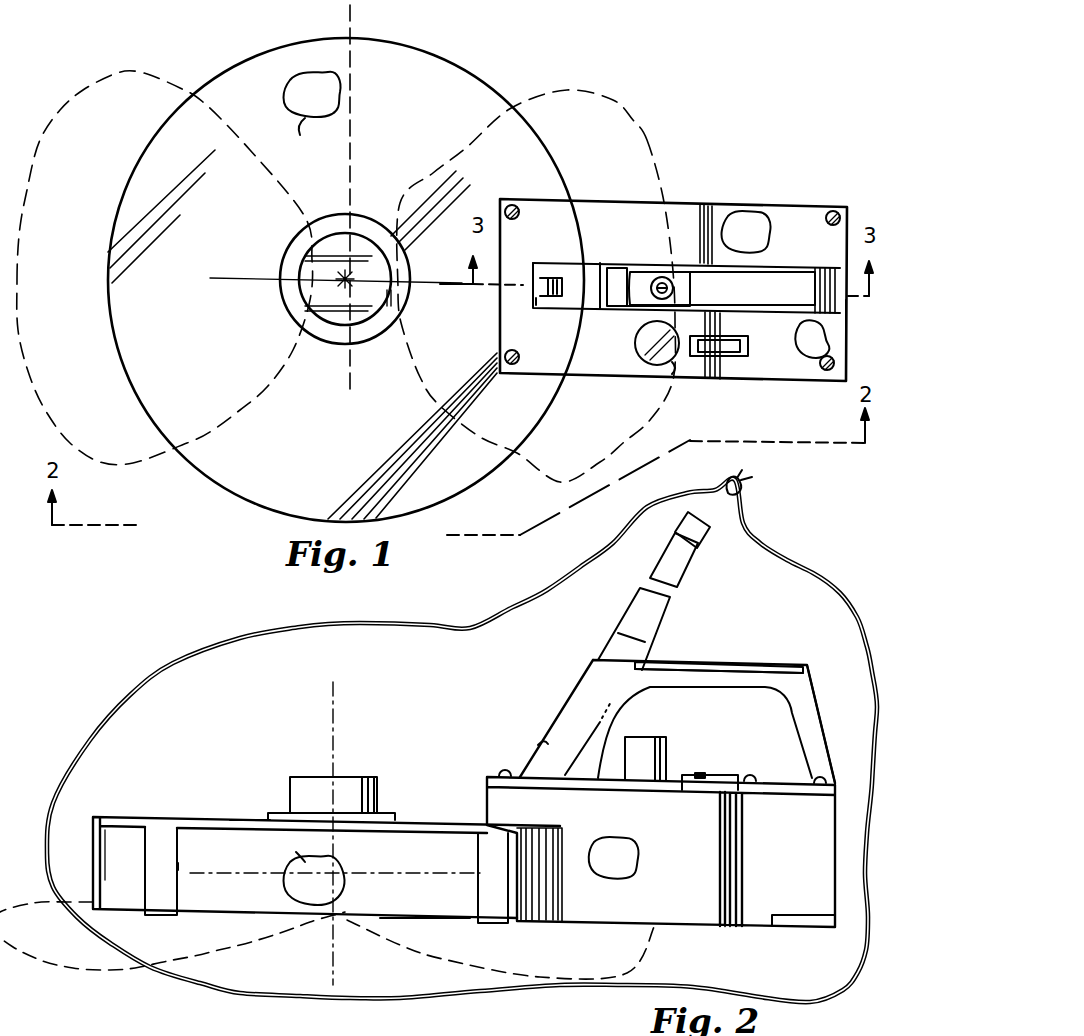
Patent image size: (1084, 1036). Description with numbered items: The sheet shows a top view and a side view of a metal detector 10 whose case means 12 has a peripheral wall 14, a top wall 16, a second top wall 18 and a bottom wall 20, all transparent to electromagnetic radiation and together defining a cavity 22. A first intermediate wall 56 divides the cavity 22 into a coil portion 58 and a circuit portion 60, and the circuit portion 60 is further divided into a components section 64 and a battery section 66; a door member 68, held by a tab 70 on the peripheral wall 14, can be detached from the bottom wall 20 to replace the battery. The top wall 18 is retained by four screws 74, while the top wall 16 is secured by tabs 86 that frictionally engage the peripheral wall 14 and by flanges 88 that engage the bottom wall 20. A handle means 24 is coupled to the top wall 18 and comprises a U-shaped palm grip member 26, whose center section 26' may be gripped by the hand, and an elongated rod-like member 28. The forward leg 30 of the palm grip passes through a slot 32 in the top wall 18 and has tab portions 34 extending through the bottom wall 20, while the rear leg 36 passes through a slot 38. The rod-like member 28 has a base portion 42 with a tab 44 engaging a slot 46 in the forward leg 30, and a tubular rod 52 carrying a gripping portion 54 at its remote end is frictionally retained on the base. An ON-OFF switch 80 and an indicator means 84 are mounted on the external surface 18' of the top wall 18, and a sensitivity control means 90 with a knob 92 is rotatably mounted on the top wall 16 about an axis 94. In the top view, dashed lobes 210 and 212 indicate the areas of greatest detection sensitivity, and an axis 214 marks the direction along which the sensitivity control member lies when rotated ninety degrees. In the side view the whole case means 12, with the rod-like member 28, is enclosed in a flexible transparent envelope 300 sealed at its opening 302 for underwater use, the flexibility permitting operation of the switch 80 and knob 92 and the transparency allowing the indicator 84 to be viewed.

In FIG. 1, the metal detector 10 is at (734, 96).
In FIG. 2, the metal detector 10 is at (278, 727).
In FIG. 1, the case means 12 is at (470, 72).
In FIG. 2, the case means 12 is at (125, 815).
In FIG. 2, the peripheral wall 14 is at (93, 840).
In FIG. 1, the top wall 16 is at (333, 434).
In FIG. 2, the top wall 16 is at (198, 816).
In FIG. 1, the top wall 18 is at (673, 290).
In FIG. 2, the top wall 18 is at (661, 827).
In FIG. 1, the external surface 18' is at (682, 383).
In FIG. 2, the bottom wall 20 is at (408, 919).
In FIG. 1, the cavity 22 is at (298, 106).
In FIG. 2, the cavity 22 is at (300, 892).
In FIG. 1, the handle means 24 is at (775, 265).
In FIG. 2, the handle means 24 is at (578, 684).
In FIG. 1, the palm grip member 26 is at (686, 335).
In FIG. 2, the palm grip member 26 is at (719, 646).
In FIG. 1, the center section 26' is at (747, 288).
In FIG. 2, the center section 26' is at (719, 648).
In FIG. 1, the elongated rod-like member 28 is at (625, 272).
In FIG. 2, the elongated rod-like member 28 is at (618, 636).
In FIG. 1, the forward leg 30 is at (570, 265).
In FIG. 2, the forward leg 30 is at (603, 708).
In FIG. 1, the slot 32 is at (536, 305).
In FIG. 2, the tab portions 34 is at (548, 928).
In FIG. 1, the rear leg 36 is at (812, 282).
In FIG. 2, the rear leg 36 is at (820, 712).
In FIG. 1, the slot 38 is at (846, 322).
In FIG. 1, the base portion 42 is at (617, 308).
In FIG. 1, the tab 44 is at (546, 282).
In FIG. 2, the tab 44 is at (540, 745).
In FIG. 1, the slot 46 is at (556, 300).
In FIG. 1, the tubular rod 52 is at (672, 282).
In FIG. 2, the tubular rod 52 is at (686, 575).
In FIG. 2, the gripping portion 54 is at (710, 540).
In FIG. 1, the first intermediate wall 56 is at (500, 294).
In FIG. 2, the first intermediate wall 56 is at (487, 803).
In FIG. 1, the coil portion 58 is at (294, 158).
In FIG. 2, the coil portion 58 is at (287, 847).
In FIG. 1, the circuit portion 60 is at (734, 242).
In FIG. 2, the circuit portion 60 is at (600, 868).
In FIG. 1, the components section 64 is at (742, 215).
In FIG. 2, the components section 64 is at (636, 846).
In FIG. 1, the battery section 66 is at (812, 358).
In FIG. 2, the door member 68 is at (790, 929).
In FIG. 2, the tab 70 is at (830, 931).
In FIG. 1, the screws 74 is at (514, 205).
In FIG. 1, the ON-OFF switch 80 is at (700, 358).
In FIG. 2, the ON-OFF switch 80 is at (700, 772).
In FIG. 1, the indicator means 84 is at (641, 352).
In FIG. 2, the indicator means 84 is at (640, 737).
In FIG. 2, the tabs 86 is at (178, 863).
In FIG. 2, the flanges 88 is at (160, 916).
In FIG. 1, the sensitivity control means 90 is at (327, 345).
In FIG. 1, the sensitivity control knob 92 is at (367, 215).
In FIG. 1, the axis 94 is at (343, 280).
In FIG. 2, the axis 94 is at (337, 697).
In FIG. 1, the lobe 210 is at (118, 72).
In FIG. 2, the lobe 210 is at (110, 970).
In FIG. 1, the lobe 212 is at (610, 100).
In FIG. 2, the lobe 212 is at (645, 946).
In FIG. 1, the axis 214 is at (352, 24).
In FIG. 2, the flexible transparent envelope 300 is at (172, 665).
In FIG. 2, the opening 302 is at (746, 496).